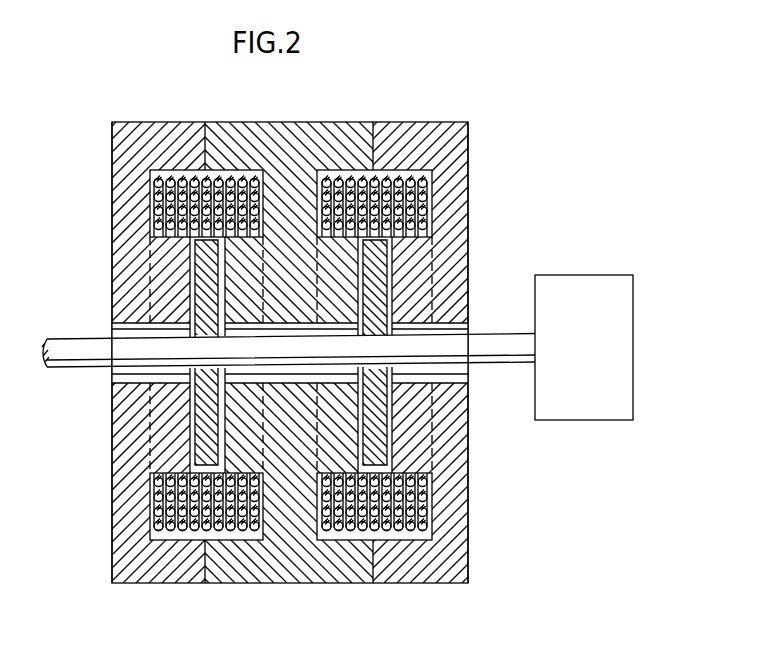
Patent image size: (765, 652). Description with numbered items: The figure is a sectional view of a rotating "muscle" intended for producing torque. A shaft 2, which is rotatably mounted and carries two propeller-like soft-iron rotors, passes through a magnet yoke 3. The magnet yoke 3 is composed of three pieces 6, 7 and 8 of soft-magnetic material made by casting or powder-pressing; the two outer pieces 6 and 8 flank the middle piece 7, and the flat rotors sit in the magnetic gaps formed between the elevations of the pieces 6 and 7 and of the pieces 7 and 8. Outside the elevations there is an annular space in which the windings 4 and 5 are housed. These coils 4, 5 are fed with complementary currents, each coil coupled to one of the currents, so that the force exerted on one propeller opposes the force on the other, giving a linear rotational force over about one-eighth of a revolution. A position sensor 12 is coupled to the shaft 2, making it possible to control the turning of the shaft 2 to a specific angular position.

The shaft 2 is at (85, 368).
The magnet yoke 3 is at (382, 333).
The winding 4 is at (227, 183).
The winding 5 is at (398, 183).
The piece 6 is at (169, 122).
The middle piece 7 is at (289, 122).
The piece 8 is at (437, 122).
The position sensor 12 is at (633, 353).